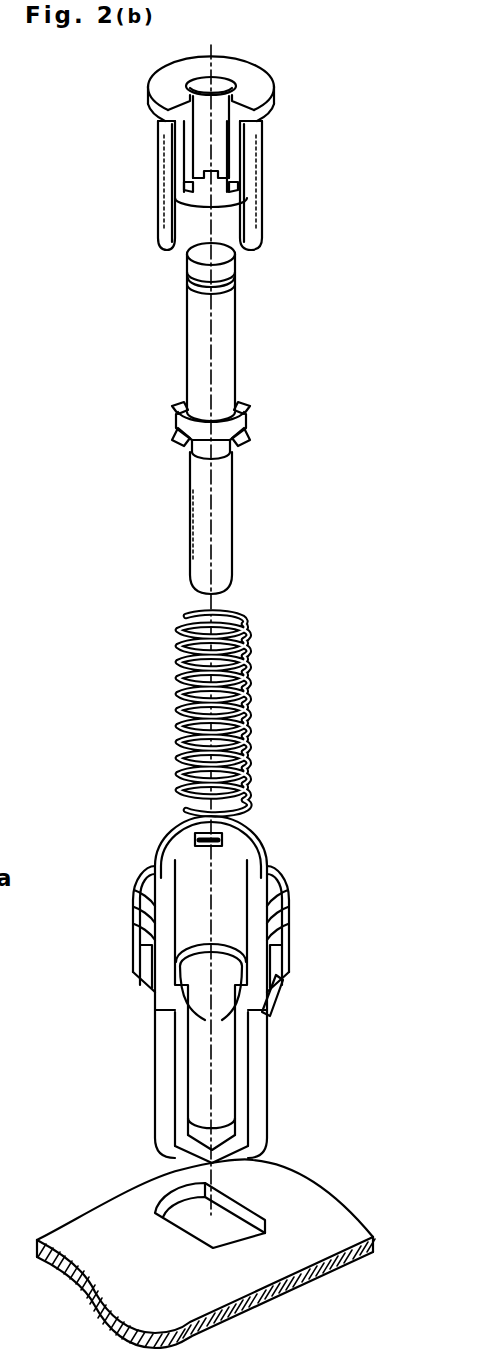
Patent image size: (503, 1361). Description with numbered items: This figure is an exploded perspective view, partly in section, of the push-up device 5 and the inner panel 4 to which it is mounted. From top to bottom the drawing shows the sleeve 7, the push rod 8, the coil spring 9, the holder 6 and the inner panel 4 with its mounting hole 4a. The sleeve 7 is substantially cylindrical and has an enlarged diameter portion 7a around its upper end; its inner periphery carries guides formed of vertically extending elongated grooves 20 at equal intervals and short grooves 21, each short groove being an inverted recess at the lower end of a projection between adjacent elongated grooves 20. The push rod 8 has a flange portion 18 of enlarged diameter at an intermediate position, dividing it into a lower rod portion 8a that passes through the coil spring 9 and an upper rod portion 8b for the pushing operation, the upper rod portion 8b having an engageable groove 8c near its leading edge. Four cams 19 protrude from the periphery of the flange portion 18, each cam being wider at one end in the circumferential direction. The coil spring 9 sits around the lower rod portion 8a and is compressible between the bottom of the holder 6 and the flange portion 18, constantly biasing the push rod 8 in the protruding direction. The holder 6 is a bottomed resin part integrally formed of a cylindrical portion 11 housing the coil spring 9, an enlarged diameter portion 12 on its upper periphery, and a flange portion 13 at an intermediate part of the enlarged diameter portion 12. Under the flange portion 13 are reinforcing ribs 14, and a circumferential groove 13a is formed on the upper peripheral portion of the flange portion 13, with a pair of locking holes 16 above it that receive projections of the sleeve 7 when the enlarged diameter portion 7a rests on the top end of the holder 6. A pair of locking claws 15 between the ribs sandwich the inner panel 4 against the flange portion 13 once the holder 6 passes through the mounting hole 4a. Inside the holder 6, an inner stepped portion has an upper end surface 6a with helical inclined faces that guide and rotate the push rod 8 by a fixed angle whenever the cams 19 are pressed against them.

The inner panel 4 is at (206, 1233).
The mounting hole 4a is at (243, 1205).
The push-up device 5 is at (298, 88).
The holder 6 is at (224, 987).
The upper end surface 6a is at (166, 1014).
The sleeve 7 is at (201, 153).
The enlarged diameter portion 7a is at (157, 86).
The push rod 8 is at (233, 418).
The lower rod portion 8a is at (224, 528).
The upper rod portion 8b is at (220, 330).
The engageable groove 8c is at (190, 282).
The coil spring 9 is at (246, 705).
The cylindrical portion 11 is at (157, 1078).
The enlarged diameter portion 12 is at (150, 985).
The flange portion 13 is at (291, 918).
The circumferential groove 13a is at (290, 882).
The reinforcing ribs 14 is at (141, 956).
The locking claws 15 is at (278, 990).
The locking holes 16 is at (250, 838).
The flange portion 18 is at (210, 433).
The cams 19 is at (176, 412).
The elongated grooves 20 is at (234, 192).
The short grooves 21 is at (230, 185).